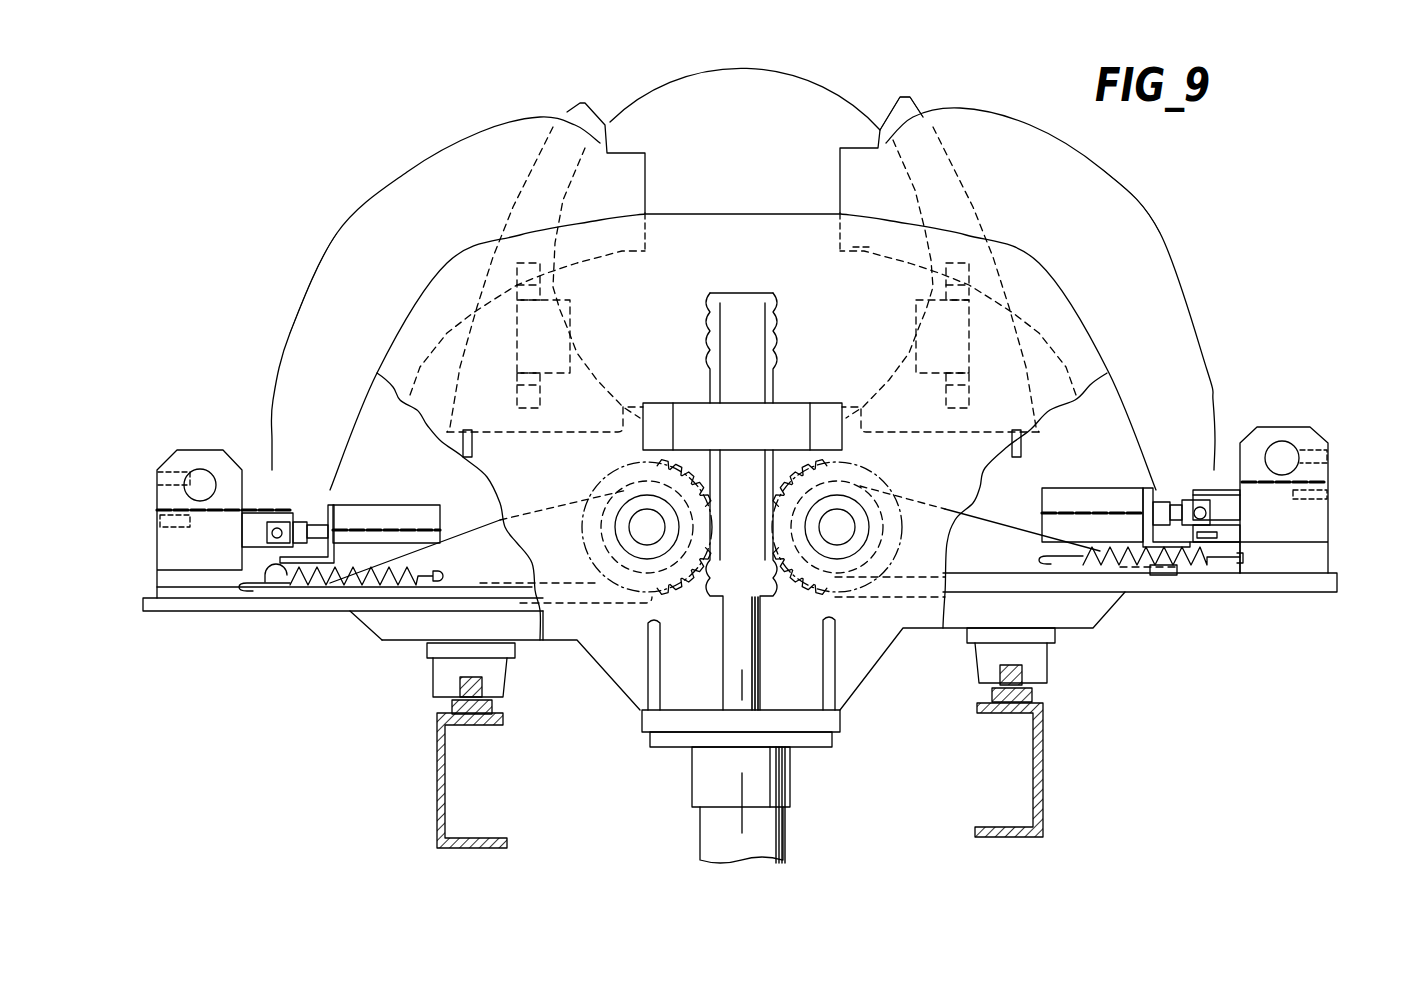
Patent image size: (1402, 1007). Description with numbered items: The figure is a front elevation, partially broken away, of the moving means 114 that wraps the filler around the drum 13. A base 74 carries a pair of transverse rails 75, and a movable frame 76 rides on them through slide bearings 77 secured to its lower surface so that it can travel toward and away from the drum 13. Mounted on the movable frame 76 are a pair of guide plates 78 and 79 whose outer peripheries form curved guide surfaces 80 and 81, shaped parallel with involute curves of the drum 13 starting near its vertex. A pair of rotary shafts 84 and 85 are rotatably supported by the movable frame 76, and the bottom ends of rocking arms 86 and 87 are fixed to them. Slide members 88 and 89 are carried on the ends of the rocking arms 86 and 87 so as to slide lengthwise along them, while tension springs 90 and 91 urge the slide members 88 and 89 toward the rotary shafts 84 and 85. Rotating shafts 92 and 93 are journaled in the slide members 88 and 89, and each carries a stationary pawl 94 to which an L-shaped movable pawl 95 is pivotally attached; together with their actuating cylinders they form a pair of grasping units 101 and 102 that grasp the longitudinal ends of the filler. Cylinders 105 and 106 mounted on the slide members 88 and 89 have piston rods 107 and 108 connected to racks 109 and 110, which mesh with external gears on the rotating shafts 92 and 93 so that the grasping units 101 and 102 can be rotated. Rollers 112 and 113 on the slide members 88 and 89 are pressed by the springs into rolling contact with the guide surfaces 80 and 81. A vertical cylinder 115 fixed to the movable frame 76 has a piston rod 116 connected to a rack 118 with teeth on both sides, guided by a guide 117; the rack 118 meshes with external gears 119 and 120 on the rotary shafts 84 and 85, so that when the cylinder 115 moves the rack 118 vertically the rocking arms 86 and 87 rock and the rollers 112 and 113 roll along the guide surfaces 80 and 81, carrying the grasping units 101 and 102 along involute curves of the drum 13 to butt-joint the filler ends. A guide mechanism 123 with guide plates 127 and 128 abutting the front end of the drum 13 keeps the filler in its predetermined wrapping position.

The drum 13 is at (801, 84).
The base 74 is at (447, 794).
The rails 75 is at (483, 680).
The movable frame 76 is at (1103, 610).
The slide bearings 77 is at (433, 678).
The guide plate 78 is at (407, 174).
The guide plate 79 is at (1100, 171).
The guide surface 80 is at (337, 236).
The guide surface 81 is at (1160, 233).
The rotary shaft 84 is at (633, 525).
The rotary shaft 85 is at (850, 522).
The rocking arm 86 is at (337, 603).
The rocking arm 87 is at (1236, 588).
The slide member 88 is at (157, 588).
The slide member 89 is at (1288, 567).
The tension spring 90 is at (317, 590).
The tension spring 91 is at (1172, 578).
The rotating shaft 92 is at (203, 470).
The rotating shaft 93 is at (1276, 446).
The stationary pawl 94 is at (160, 472).
The movable pawl 95 is at (158, 521).
The grasping unit 101 is at (155, 495).
The grasping unit 102 is at (1340, 447).
The cylinder 105 is at (413, 505).
The cylinder 106 is at (1073, 490).
The piston rod 107 is at (320, 526).
The piston rod 108 is at (1163, 502).
The rack 109 is at (263, 512).
The rack 110 is at (1220, 490).
The roller 112 is at (268, 558).
The roller 113 is at (1242, 532).
The moving means 114 is at (840, 734).
The cylinder 115 is at (785, 848).
The piston rod 116 is at (758, 672).
The guide 117 is at (793, 403).
The rack 118 is at (770, 337).
The external gear 119 is at (613, 469).
The external gear 120 is at (867, 461).
The guide mechanism 123 is at (918, 98).
The guide plate 127 is at (565, 110).
The guide plate 128 is at (886, 118).